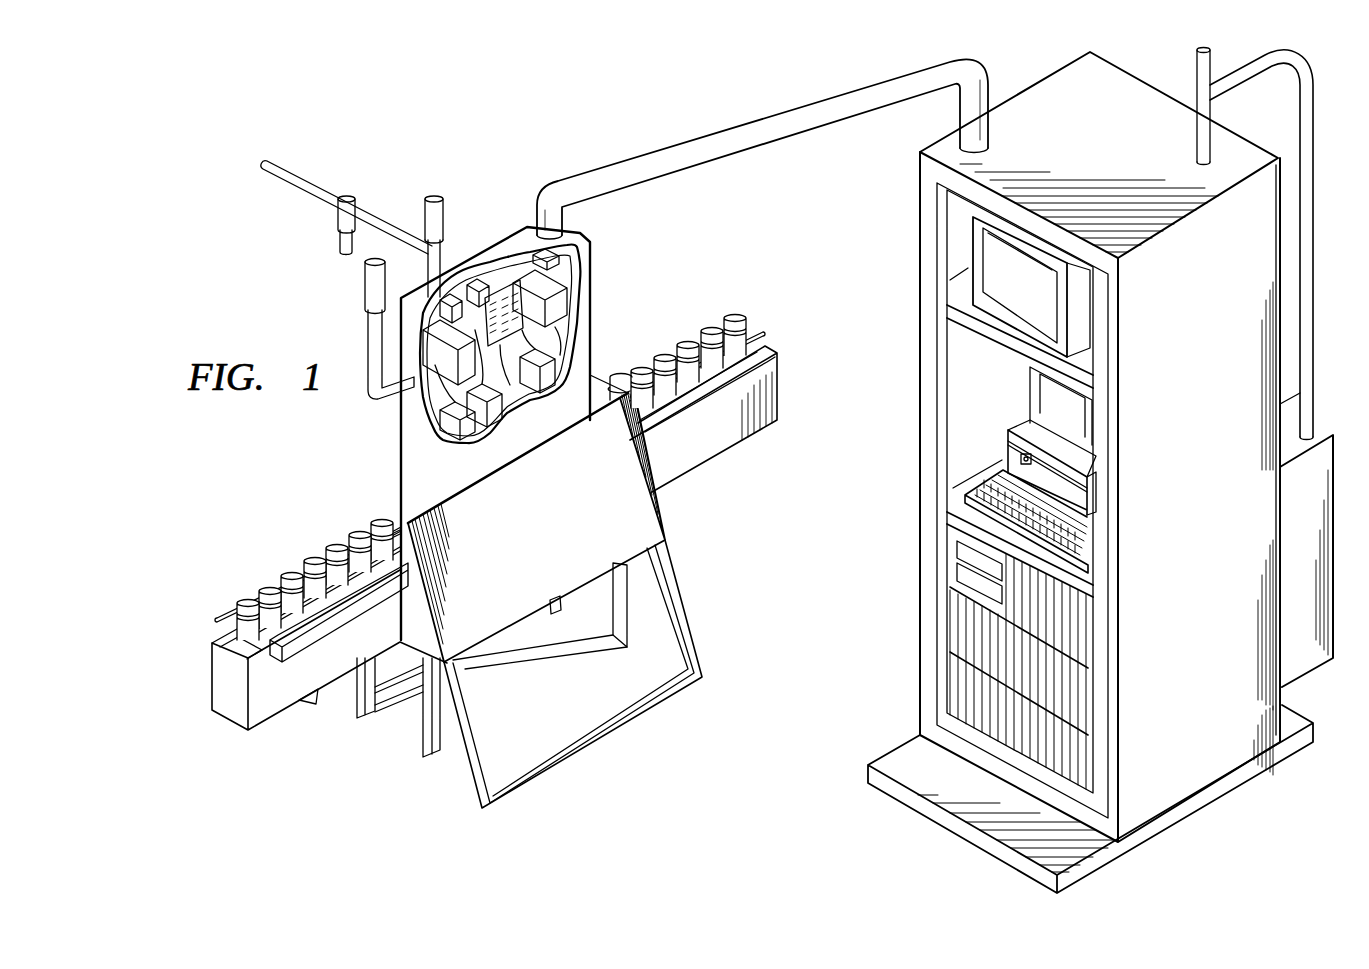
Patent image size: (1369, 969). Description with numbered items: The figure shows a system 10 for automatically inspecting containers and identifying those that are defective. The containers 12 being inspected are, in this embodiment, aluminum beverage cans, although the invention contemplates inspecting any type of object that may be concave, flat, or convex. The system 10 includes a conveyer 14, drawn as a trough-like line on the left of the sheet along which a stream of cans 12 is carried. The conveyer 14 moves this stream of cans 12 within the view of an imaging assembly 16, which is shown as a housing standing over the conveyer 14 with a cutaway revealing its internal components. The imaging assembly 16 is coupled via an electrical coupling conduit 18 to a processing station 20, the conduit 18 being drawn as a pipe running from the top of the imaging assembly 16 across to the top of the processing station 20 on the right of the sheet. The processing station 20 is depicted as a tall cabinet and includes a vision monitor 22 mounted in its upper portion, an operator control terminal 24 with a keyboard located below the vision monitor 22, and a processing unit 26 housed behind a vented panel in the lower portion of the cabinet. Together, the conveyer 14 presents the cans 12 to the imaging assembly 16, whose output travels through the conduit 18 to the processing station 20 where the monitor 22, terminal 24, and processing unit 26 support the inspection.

The system 10 is at (259, 867).
The containers 12 is at (253, 570).
The conveyer 14 is at (270, 707).
The imaging assembly 16 is at (491, 238).
The electrical coupling conduit 18 is at (767, 118).
The processing station 20 is at (1243, 153).
The vision monitor 22 is at (1080, 302).
The operator control terminal 24 is at (1022, 423).
The processing unit 26 is at (955, 640).